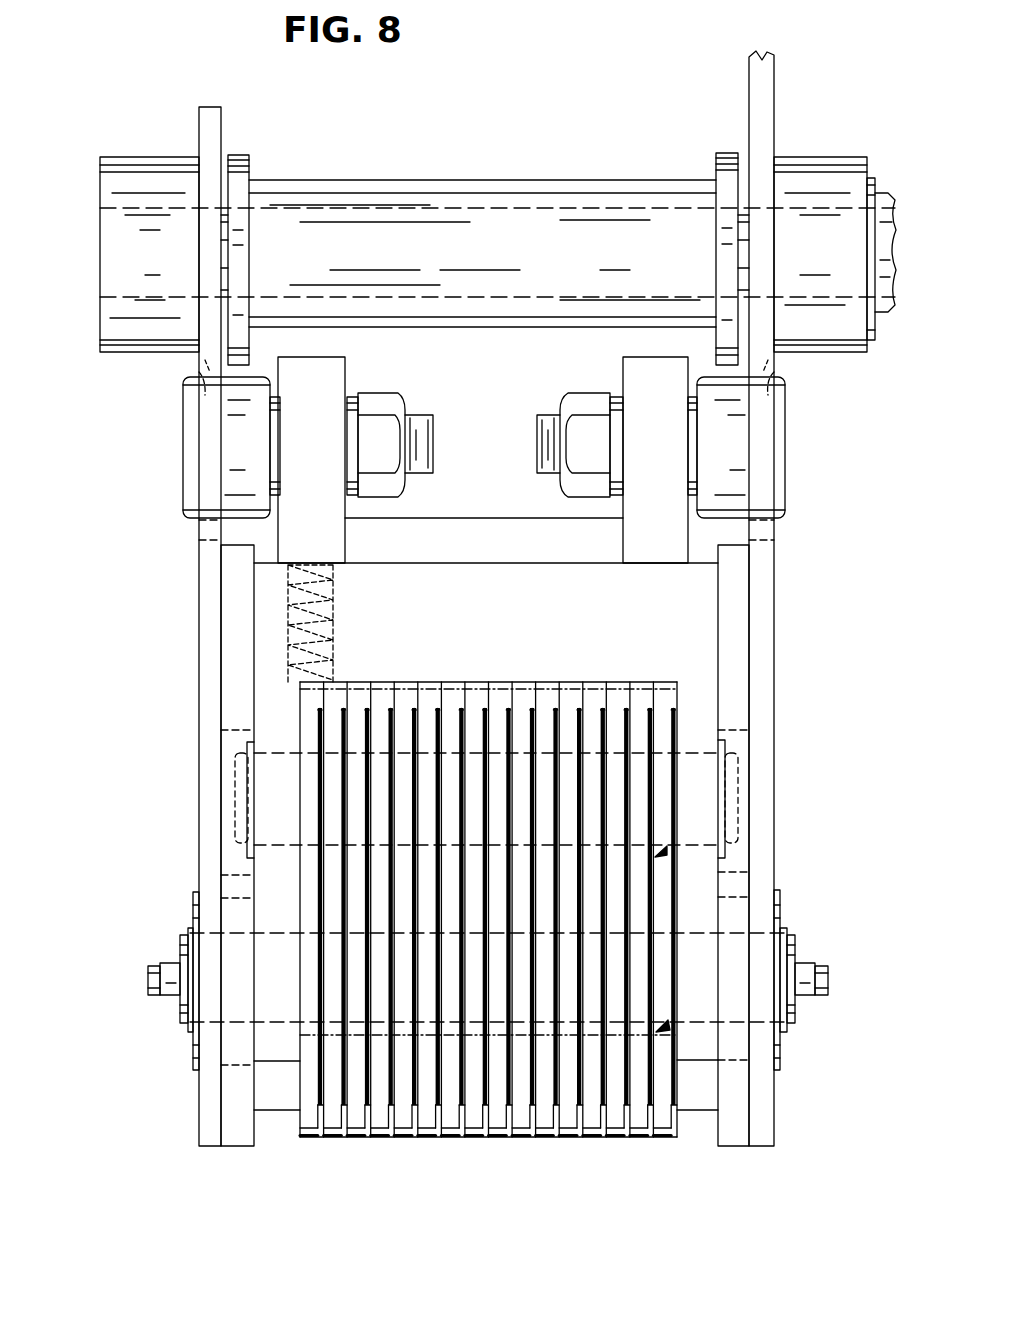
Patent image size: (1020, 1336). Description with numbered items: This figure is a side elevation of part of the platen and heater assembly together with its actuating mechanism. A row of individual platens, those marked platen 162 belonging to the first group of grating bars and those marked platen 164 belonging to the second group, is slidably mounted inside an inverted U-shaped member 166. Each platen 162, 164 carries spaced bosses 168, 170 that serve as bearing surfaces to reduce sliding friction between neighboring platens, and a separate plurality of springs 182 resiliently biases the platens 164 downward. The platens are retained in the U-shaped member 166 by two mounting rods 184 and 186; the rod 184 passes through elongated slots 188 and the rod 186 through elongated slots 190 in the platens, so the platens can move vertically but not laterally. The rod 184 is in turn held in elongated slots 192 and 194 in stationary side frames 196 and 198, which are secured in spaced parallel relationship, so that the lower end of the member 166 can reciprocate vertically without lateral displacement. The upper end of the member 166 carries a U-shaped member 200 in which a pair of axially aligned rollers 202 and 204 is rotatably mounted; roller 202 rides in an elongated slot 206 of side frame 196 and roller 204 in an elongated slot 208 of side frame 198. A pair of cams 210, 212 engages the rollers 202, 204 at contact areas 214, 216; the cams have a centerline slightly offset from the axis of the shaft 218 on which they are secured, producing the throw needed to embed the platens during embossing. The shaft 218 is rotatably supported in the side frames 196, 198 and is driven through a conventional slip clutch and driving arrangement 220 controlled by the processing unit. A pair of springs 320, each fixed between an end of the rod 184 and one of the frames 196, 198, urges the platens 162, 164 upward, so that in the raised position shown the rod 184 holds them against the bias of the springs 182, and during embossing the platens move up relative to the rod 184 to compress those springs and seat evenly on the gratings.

The platen 162 is at (302, 1128).
The platen 164 is at (344, 1137).
The inverted U-shaped member 166 is at (698, 706).
The boss 168 is at (480, 1092).
The boss 170 is at (322, 690).
The spring 182 is at (318, 602).
The mounting rod 184 is at (753, 932).
The mounting rod 186 is at (738, 781).
The elongated slot 188 is at (668, 1020).
The elongated slot 190 is at (662, 850).
The elongated slot 192 is at (218, 905).
The elongated slot 194 is at (758, 1065).
The stationary side frame 196 is at (200, 608).
The stationary side frame 198 is at (766, 642).
The U-shaped member 200 is at (515, 518).
The roller 202 is at (183, 472).
The roller 204 is at (785, 490).
The elongated slot 206 is at (206, 390).
The elongated slot 208 is at (768, 390).
The cam 210 is at (250, 163).
The cam 212 is at (716, 162).
The contact area 214 is at (272, 378).
The contact area 216 is at (697, 380).
The shaft 218 is at (470, 180).
The slip clutch and driving arrangement 220 is at (818, 158).
The spring 320 is at (330, 1137).